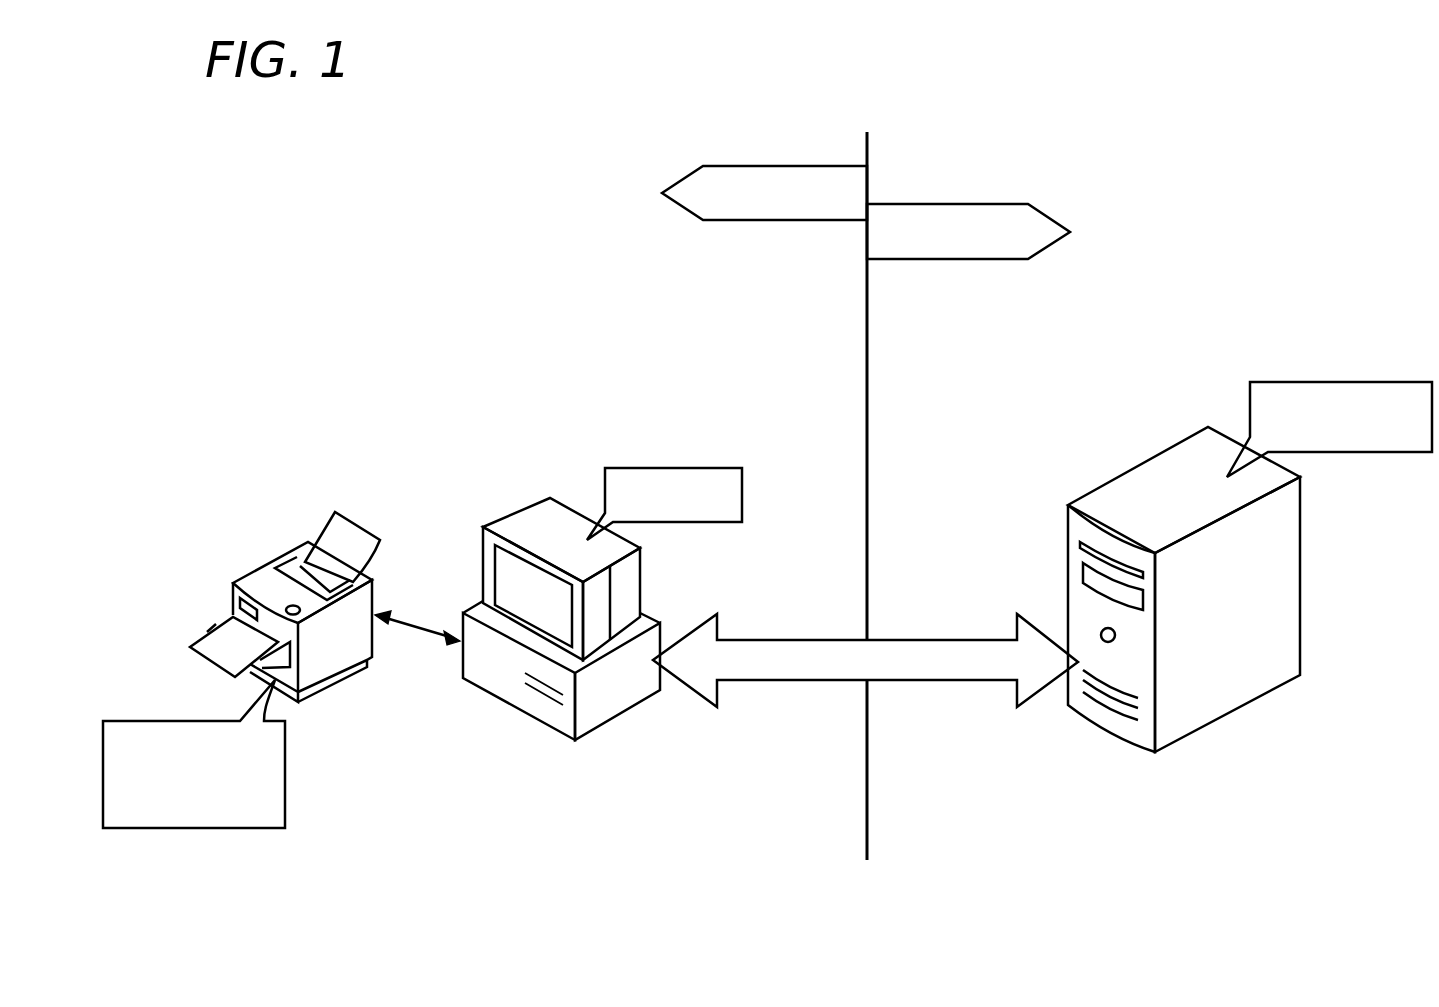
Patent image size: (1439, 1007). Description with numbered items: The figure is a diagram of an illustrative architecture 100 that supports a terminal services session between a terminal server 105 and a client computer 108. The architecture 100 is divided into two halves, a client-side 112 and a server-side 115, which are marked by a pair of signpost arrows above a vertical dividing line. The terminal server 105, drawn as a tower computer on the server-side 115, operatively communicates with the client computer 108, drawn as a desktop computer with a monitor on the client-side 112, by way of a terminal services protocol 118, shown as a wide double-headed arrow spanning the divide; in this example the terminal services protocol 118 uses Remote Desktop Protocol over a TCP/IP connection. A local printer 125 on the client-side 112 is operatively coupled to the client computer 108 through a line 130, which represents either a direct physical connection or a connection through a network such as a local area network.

The architecture 100 is at (480, 208).
The terminal server 105 is at (1120, 473).
The client computer 108 is at (506, 512).
The client-side 112 is at (767, 166).
The server-side 115 is at (955, 204).
The terminal services protocol 118 is at (972, 640).
The local printer 125 is at (251, 572).
The line 130 is at (425, 640).